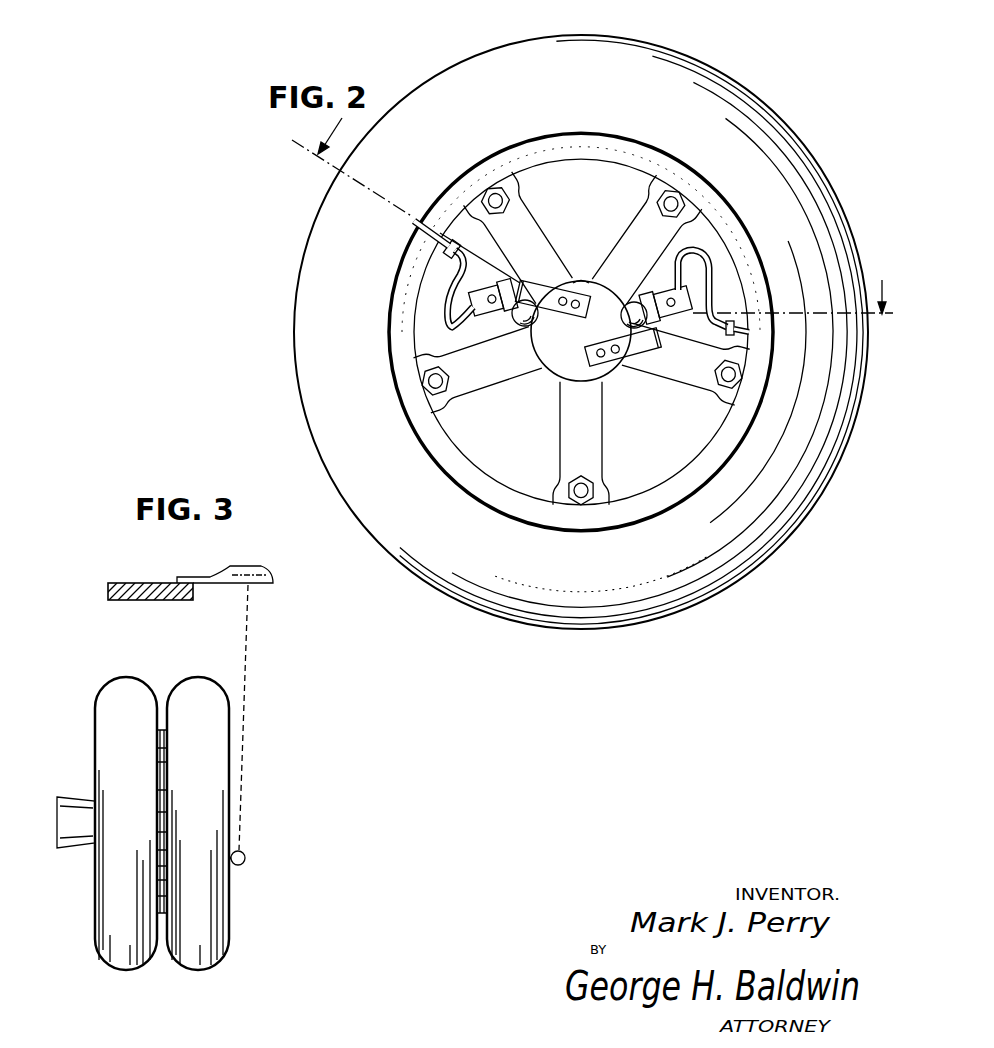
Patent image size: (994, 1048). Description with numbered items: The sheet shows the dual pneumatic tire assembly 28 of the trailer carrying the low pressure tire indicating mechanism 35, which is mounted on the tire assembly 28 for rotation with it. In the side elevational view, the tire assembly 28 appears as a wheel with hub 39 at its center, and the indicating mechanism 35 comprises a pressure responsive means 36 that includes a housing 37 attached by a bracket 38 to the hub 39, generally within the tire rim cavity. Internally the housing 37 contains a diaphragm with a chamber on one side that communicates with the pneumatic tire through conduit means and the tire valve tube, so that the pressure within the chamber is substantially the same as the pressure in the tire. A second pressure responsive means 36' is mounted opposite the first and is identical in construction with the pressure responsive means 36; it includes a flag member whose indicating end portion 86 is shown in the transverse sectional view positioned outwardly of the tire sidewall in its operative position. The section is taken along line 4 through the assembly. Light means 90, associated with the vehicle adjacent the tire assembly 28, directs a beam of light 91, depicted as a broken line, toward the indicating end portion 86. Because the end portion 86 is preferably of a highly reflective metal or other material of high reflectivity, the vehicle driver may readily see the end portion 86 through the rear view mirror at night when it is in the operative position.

In FIG. 2, the dual pneumatic tire assembly 28 is at (689, 60).
In FIG. 3, the dual pneumatic tire assembly 28 is at (151, 678).
In FIG. 2, the section line 4- 4 is at (592, 216).
In FIG. 2, the low pressure tire indicating mechanism 35 is at (592, 336).
In FIG. 2, the pressure responsive means 36 is at (502, 312).
In FIG. 2, the pressure responsive means 36' is at (685, 293).
In FIG. 2, the housing 37 is at (500, 292).
In FIG. 2, the bracket 38 is at (533, 281).
In FIG. 2, the hub 39 is at (584, 282).
In FIG. 3, the light means 90 is at (247, 575).
In FIG. 3, the beam of light 91 is at (249, 690).
In FIG. 3, the indicating end portion 86 is at (243, 860).